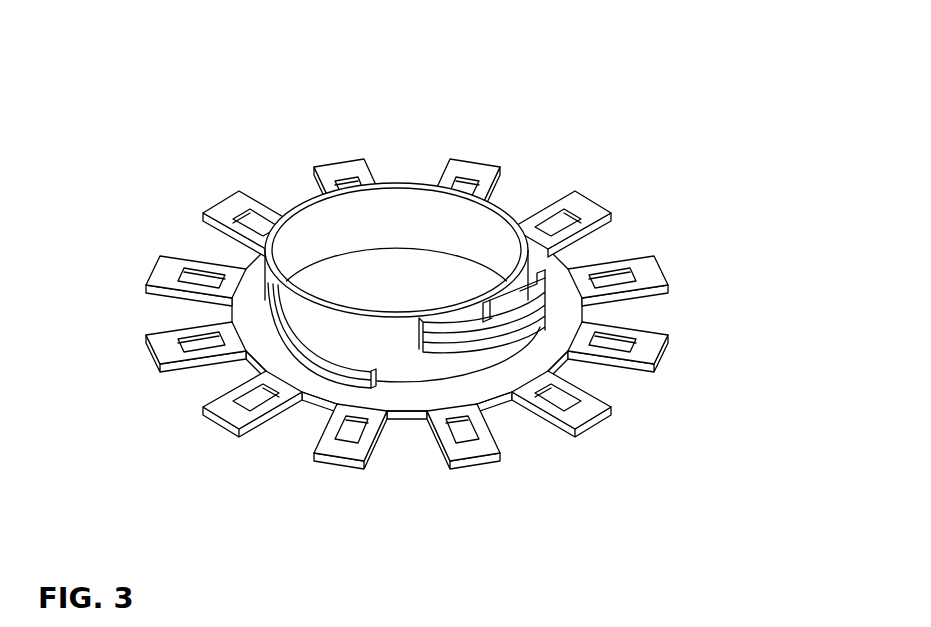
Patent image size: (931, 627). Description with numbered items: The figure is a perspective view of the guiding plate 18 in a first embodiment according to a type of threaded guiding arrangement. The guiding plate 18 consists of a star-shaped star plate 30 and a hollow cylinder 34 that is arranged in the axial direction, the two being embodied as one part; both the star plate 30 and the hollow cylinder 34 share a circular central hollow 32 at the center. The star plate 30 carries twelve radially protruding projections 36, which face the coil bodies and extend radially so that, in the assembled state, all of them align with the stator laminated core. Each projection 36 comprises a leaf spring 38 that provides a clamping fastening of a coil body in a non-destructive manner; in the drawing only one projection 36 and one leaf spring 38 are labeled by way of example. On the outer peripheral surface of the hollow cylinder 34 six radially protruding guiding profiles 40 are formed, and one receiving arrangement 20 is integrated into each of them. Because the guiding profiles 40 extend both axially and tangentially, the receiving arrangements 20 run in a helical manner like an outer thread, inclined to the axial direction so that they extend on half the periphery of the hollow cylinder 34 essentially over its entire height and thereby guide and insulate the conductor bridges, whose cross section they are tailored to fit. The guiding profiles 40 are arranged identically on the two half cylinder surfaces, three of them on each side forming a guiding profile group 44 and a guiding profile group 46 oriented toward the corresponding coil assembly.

The guiding plate 18 is at (278, 452).
The receiving arrangement 20 is at (500, 291).
The star plate 30 is at (467, 282).
The central hollow 32 is at (370, 283).
The hollow cylinder 34 is at (487, 214).
The projection 36 is at (604, 161).
The leaf spring 38 is at (555, 220).
The guiding profile 40 is at (538, 270).
The guiding profile group 44 is at (658, 387).
The guiding profile group 46 is at (235, 256).